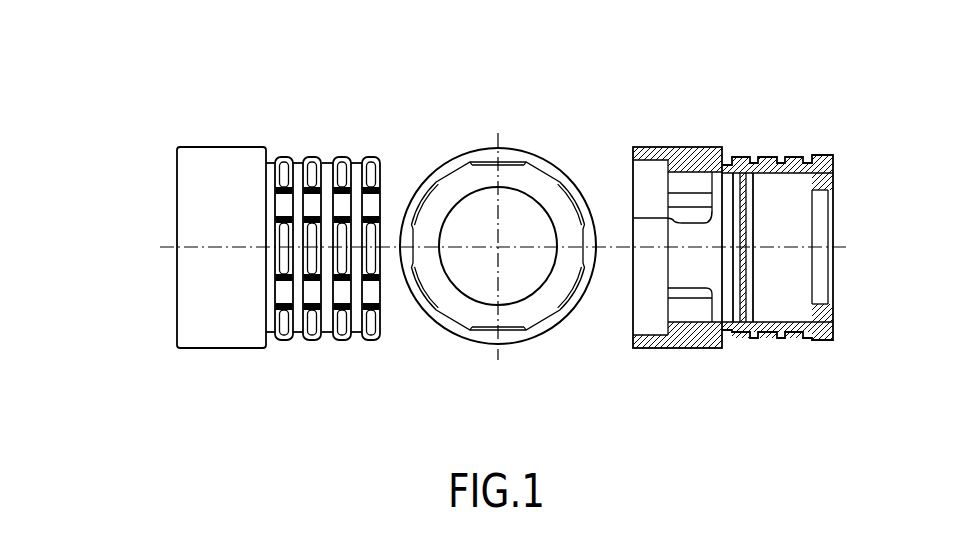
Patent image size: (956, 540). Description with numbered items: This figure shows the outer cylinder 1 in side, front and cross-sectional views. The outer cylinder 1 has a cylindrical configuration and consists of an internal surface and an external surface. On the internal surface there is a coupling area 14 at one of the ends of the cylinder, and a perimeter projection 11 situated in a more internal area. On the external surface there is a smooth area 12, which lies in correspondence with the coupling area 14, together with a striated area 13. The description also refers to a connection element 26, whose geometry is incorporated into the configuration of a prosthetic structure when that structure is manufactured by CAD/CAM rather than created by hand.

The outer cylinder 1 is at (200, 94).
The perimeter projection 11 is at (747, 293).
The smooth area 12 is at (207, 278).
The striated area 13 is at (310, 337).
The coupling area 14 is at (672, 222).
The connection element 26 is at (202, 374).